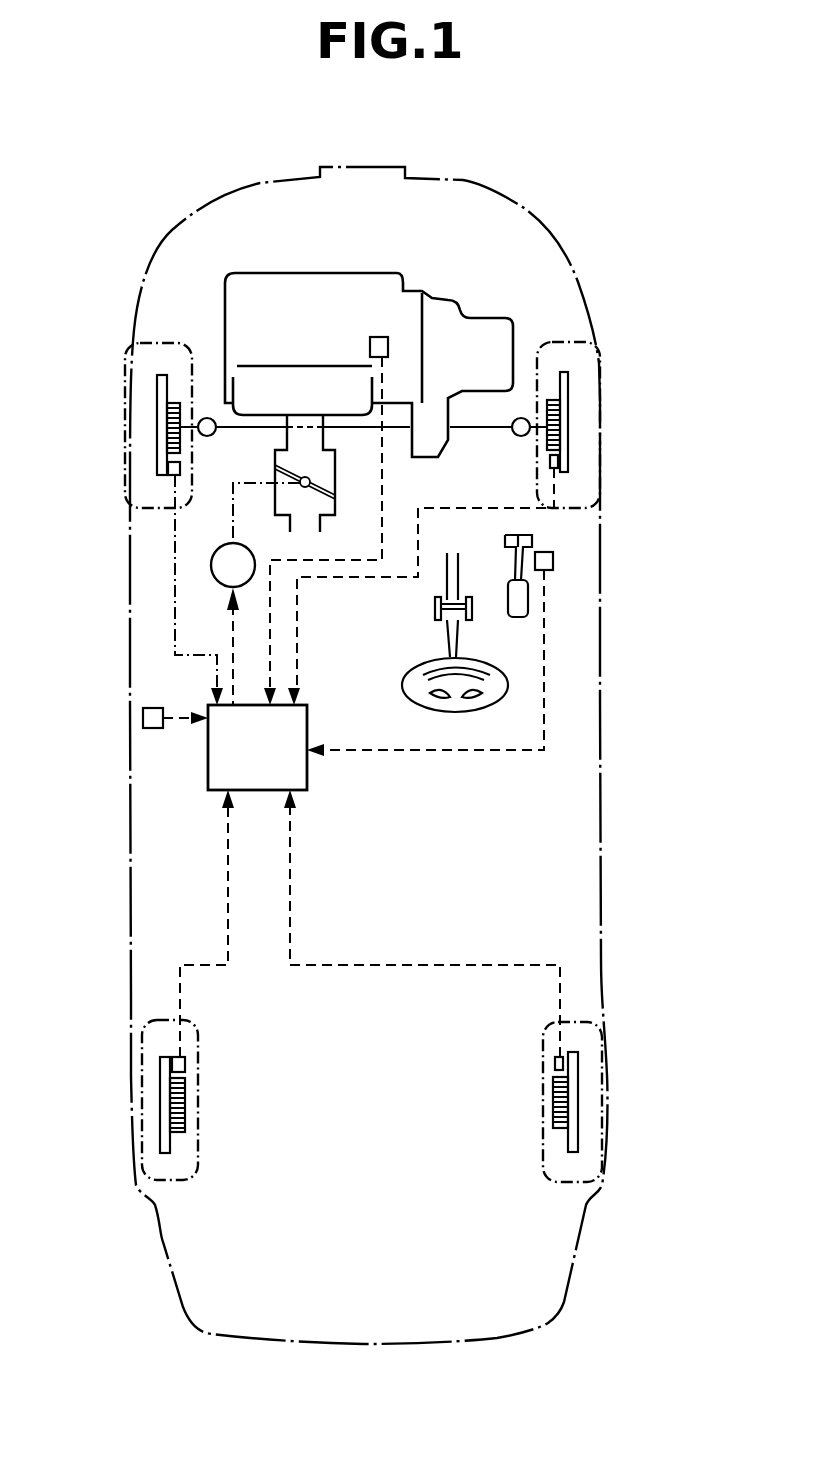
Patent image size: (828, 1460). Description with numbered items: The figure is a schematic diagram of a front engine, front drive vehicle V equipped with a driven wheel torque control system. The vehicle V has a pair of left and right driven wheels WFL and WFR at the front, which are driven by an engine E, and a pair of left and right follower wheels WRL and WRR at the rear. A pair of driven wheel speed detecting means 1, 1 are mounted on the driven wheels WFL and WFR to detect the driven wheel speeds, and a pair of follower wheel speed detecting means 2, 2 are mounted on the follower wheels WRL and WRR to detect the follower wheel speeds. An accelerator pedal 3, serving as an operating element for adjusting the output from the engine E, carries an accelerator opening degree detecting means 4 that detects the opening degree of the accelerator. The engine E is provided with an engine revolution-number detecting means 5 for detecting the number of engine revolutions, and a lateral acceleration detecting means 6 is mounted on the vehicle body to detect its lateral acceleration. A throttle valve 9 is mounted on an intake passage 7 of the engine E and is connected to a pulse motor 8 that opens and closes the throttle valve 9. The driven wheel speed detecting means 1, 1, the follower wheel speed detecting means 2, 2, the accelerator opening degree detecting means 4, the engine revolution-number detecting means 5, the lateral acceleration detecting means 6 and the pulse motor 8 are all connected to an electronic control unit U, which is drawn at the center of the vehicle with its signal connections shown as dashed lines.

The vehicle V is at (606, 806).
The engine E is at (305, 278).
The left driven wheel WFL is at (128, 395).
The right driven wheel WFR is at (607, 417).
The left follower wheel WRL is at (140, 1073).
The right follower wheel WRR is at (602, 1078).
The driven wheel speed detecting means 1 is at (175, 475).
The follower wheel speed detecting means 2 is at (185, 1063).
The accelerator pedal 3 is at (508, 583).
The accelerator opening degree detecting means 4 is at (553, 563).
The engine revolution-number detecting means 5 is at (378, 337).
The lateral acceleration detecting means 6 is at (153, 708).
The intake passage 7 is at (320, 525).
The pulse motor 8 is at (227, 547).
The throttle valve 9 is at (312, 482).
The electronic control unit U is at (272, 766).